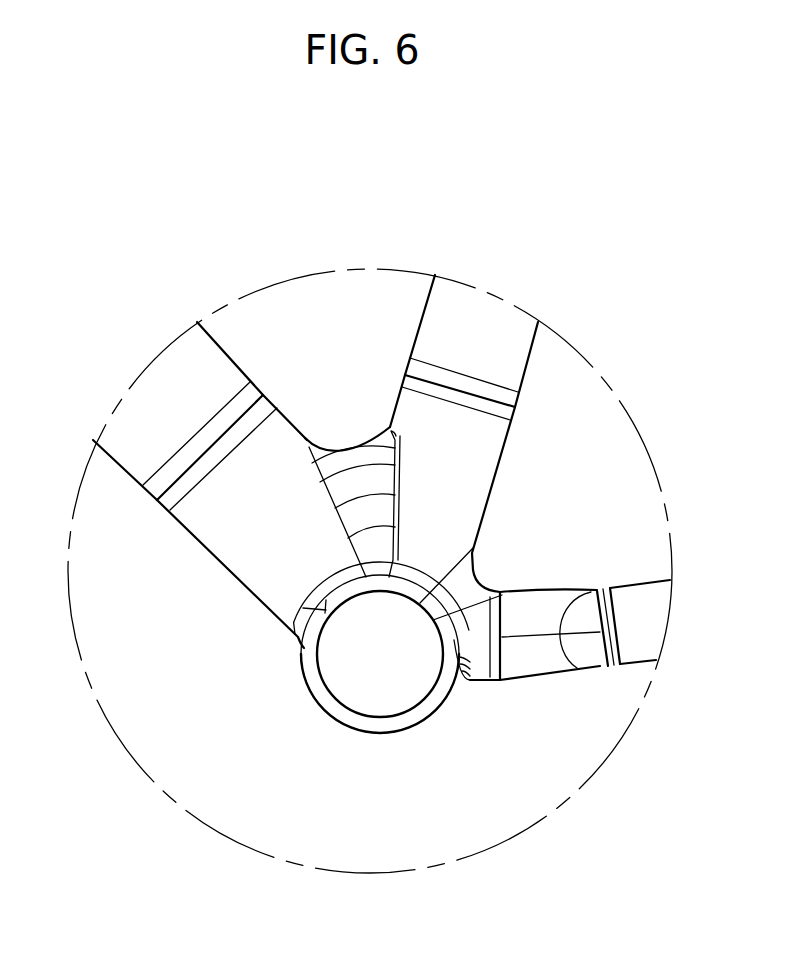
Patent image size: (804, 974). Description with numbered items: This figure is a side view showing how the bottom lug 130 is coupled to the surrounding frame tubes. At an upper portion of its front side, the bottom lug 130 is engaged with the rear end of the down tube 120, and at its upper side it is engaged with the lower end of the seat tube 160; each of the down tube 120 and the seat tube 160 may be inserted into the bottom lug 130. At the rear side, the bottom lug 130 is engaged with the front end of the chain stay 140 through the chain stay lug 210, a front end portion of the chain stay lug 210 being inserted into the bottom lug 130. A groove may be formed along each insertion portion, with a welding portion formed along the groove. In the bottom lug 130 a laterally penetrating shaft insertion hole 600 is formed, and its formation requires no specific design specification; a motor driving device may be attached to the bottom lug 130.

The down tube 120 is at (143, 400).
The bottom lug 130 is at (237, 594).
The chain stay 140 is at (630, 597).
The seat tube 160 is at (493, 315).
The chain stay lug 210 is at (538, 687).
The shaft insertion hole 600 is at (383, 682).